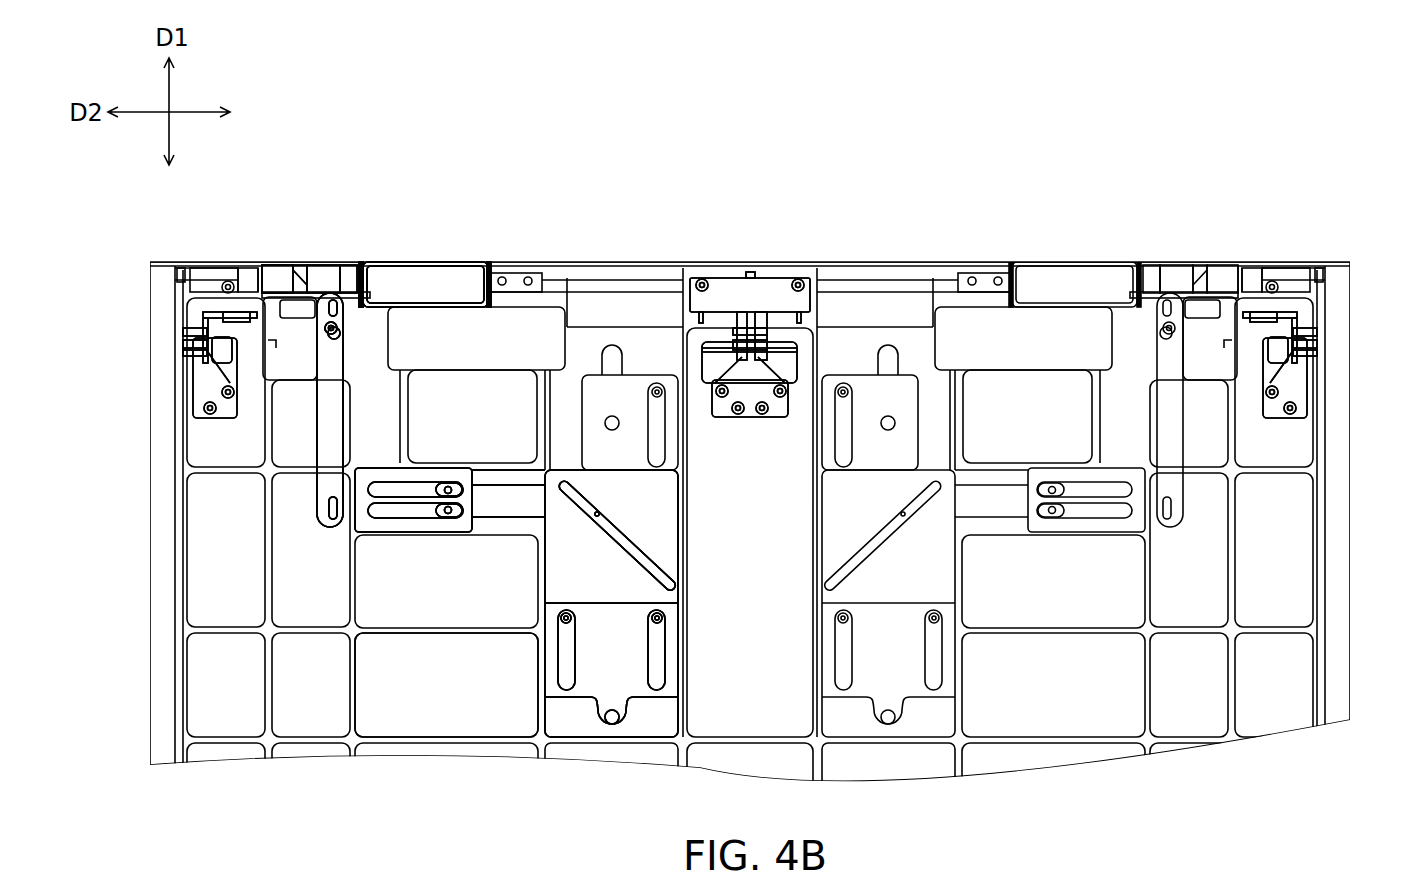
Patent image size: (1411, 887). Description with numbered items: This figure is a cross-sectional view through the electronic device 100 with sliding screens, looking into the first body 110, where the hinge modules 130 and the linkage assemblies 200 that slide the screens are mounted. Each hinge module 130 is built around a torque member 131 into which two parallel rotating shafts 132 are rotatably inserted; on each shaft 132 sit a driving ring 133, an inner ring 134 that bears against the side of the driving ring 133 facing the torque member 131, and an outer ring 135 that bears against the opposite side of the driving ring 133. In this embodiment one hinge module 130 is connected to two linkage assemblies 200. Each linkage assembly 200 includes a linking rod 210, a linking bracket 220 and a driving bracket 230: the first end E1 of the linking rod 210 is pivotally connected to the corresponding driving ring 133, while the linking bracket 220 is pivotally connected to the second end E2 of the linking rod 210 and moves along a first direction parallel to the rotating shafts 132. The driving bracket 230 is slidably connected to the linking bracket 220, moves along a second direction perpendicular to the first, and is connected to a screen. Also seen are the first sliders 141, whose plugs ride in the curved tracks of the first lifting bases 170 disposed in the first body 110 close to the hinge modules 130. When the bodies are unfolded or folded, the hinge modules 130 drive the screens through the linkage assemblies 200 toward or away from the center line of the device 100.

The electronic device with sliding screens 100 is at (1300, 804).
The first body 110 is at (448, 715).
The hinge module 130 is at (208, 213).
The torque member 131 is at (407, 277).
The rotating shaft 132 is at (303, 277).
The driving ring 133 is at (323, 277).
The inner ring 134 is at (348, 277).
The outer ring 135 is at (277, 276).
The first slider 141 is at (777, 363).
The first lifting base 170 is at (753, 393).
The linkage assembly 200 is at (88, 510).
The linking rod 210 is at (327, 463).
The linking bracket 220 is at (365, 505).
The driving bracket 230 is at (577, 567).
The first end E1 is at (338, 312).
The second end E2 is at (337, 503).